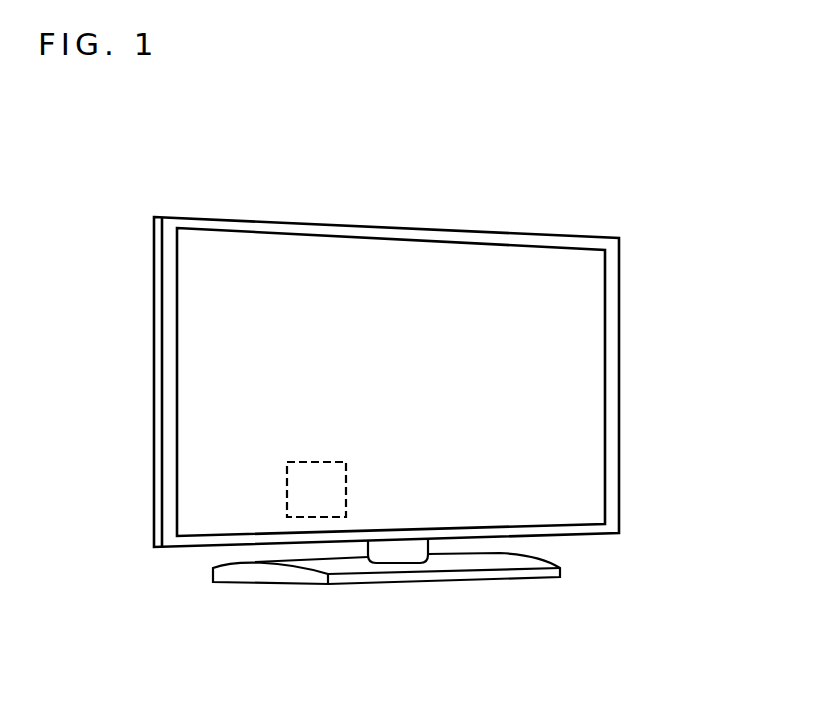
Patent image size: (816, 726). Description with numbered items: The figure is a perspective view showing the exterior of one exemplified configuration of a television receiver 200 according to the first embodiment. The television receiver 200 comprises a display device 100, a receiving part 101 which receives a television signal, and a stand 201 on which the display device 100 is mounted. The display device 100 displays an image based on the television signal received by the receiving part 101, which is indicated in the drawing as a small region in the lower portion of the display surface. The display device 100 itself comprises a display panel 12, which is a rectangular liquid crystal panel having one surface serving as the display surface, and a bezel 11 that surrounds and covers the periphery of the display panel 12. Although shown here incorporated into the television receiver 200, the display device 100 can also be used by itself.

The television receiver 200 is at (800, 175).
The display device 100 is at (572, 433).
The bezel 11 is at (620, 304).
The display panel 12 is at (570, 362).
The receiving part 101 is at (282, 488).
The stand 201 is at (509, 563).